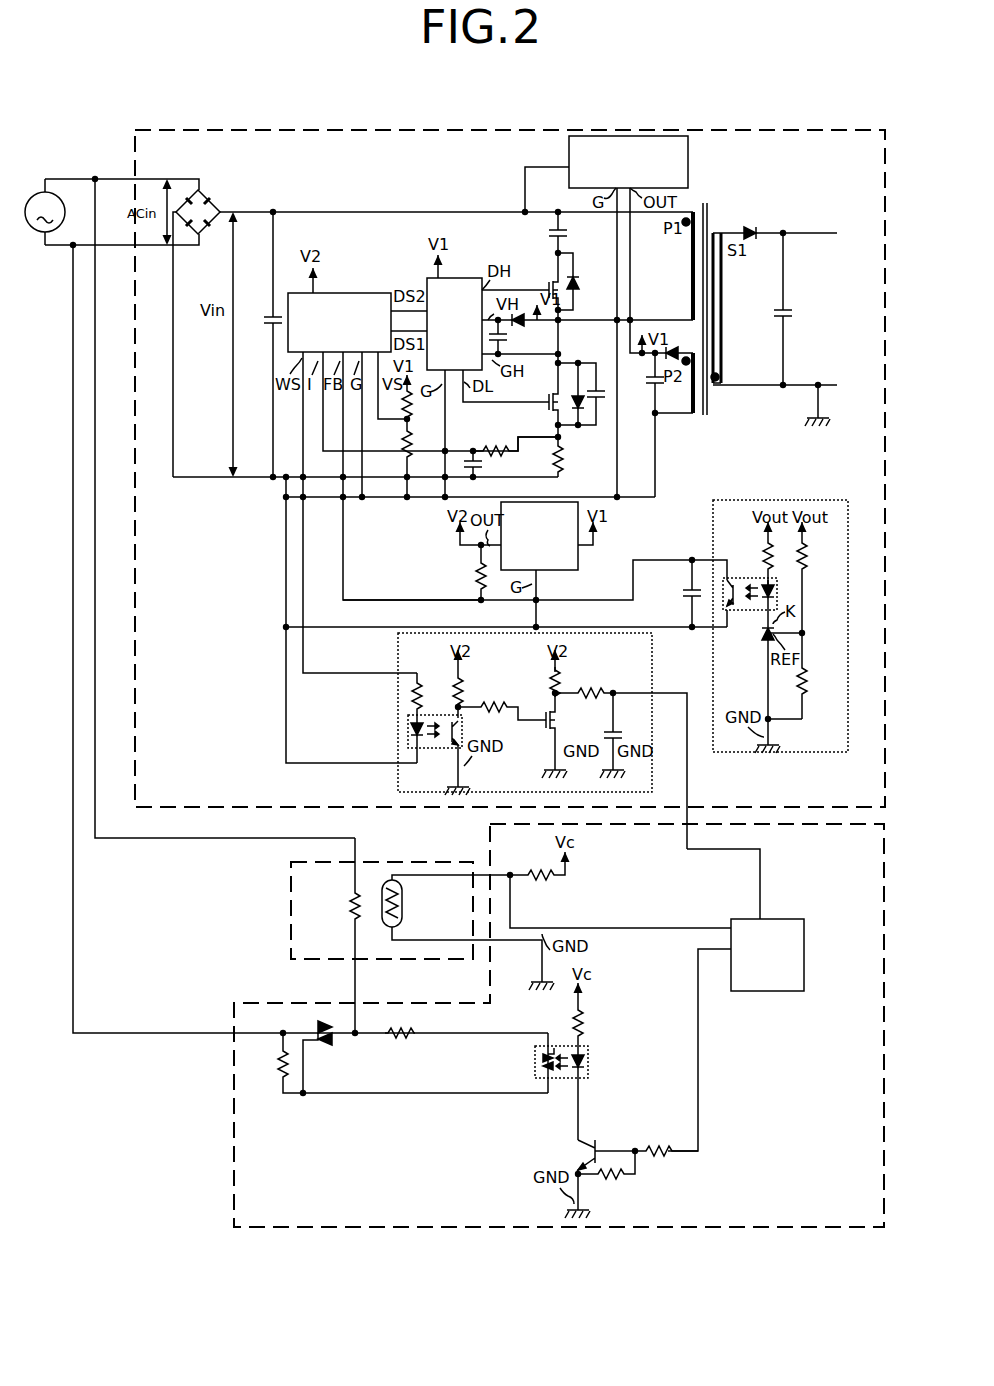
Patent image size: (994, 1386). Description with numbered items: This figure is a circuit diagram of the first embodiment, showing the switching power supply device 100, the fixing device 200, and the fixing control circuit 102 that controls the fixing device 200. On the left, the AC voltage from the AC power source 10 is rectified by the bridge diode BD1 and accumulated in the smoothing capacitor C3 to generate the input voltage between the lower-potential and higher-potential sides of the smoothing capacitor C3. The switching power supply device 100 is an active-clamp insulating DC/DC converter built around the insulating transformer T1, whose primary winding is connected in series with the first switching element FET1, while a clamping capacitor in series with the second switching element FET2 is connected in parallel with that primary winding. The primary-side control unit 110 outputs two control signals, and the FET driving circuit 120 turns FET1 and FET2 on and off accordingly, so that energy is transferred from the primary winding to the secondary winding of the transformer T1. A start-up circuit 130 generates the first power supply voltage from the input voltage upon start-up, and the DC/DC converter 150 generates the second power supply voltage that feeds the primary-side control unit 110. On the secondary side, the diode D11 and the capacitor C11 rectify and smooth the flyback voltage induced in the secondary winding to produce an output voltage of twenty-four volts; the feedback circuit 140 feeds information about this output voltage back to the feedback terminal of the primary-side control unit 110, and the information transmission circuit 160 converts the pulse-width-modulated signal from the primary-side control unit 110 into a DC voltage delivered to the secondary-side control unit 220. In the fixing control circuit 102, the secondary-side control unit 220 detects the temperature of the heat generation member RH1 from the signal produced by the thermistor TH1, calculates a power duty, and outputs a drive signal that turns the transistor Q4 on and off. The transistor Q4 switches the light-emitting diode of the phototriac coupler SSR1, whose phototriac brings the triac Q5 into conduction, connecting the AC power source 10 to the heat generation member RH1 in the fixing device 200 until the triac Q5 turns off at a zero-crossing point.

The AC power source 10 is at (51, 180).
The switching power supply device 100 is at (885, 296).
The fixing control circuit 102 is at (884, 912).
The primary-side control unit 110 is at (318, 284).
The FET driving circuit 120 is at (443, 282).
The start-up circuit 130 is at (570, 168).
The feedback circuit 140 is at (838, 500).
The DC/DC converter 150 is at (576, 550).
The information transmission circuit 160 is at (654, 686).
The fixing device 200 is at (290, 919).
The secondary-side control unit 220 is at (767, 955).
The bridge diode BD1 is at (204, 194).
The smoothing capacitor C3 is at (264, 326).
The insulating transformer T1 is at (706, 206).
The first switching element FET1 is at (548, 398).
The second switching element FET2 is at (547, 282).
The diode D11 is at (744, 228).
The capacitor C11 is at (780, 312).
The heat generation member RH1 is at (350, 910).
The thermistor TH1 is at (402, 904).
The triac Q5 is at (322, 1048).
The phototriac coupler SSR1 is at (590, 1061).
The transistor Q4 is at (590, 1134).